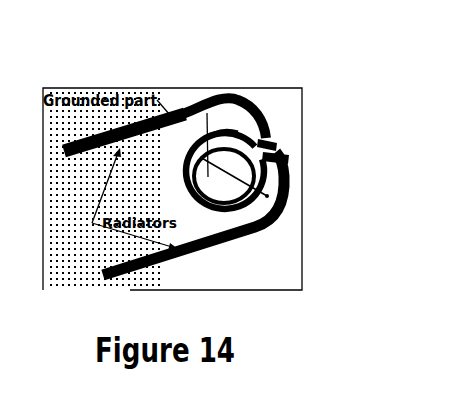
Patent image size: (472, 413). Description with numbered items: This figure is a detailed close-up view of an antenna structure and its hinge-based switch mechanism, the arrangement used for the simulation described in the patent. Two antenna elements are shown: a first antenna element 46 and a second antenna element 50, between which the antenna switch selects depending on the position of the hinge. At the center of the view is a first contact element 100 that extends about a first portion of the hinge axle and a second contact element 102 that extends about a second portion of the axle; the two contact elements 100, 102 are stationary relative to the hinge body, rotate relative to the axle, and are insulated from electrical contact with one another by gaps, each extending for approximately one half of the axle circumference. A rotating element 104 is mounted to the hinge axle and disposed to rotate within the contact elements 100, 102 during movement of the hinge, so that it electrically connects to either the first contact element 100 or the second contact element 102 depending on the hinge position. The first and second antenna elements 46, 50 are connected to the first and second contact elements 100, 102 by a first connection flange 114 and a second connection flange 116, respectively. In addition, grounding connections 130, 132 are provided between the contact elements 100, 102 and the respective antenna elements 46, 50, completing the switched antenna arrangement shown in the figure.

The first antenna element 46 is at (87, 147).
The second antenna element 50 is at (152, 270).
The first contact element 100 is at (205, 102).
The second contact element 102 is at (215, 214).
The rotating element 104 is at (212, 173).
The first connection flange 114 is at (272, 138).
The second connection flange 116 is at (285, 178).
The grounding connection 130 is at (236, 116).
The grounding connection 132 is at (271, 203).